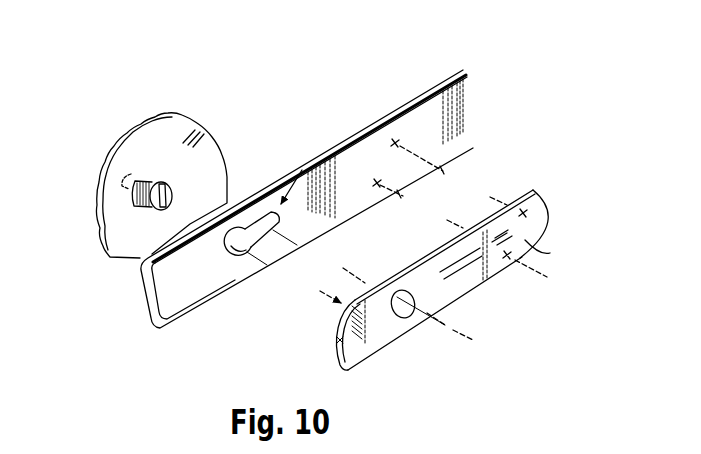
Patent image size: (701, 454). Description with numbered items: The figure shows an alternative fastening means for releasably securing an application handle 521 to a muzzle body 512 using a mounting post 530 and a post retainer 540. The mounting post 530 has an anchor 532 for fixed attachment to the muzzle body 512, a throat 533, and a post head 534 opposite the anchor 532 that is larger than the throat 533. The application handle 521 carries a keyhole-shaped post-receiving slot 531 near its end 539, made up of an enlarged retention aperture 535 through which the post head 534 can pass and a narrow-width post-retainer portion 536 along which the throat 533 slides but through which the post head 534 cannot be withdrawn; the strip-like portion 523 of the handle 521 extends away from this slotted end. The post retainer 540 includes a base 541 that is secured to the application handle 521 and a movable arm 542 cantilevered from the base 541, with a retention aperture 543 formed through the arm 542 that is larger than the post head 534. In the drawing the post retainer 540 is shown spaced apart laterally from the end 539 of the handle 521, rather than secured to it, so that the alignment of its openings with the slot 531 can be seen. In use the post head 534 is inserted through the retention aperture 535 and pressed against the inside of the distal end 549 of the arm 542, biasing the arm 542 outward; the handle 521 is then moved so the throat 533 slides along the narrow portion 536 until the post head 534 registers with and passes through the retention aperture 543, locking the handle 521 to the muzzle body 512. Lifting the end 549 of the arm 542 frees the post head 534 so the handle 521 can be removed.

The muzzle body 512 is at (232, 160).
The application handle 521 is at (375, 122).
The raised strip portion 523 is at (310, 169).
The mounting post 530 is at (136, 213).
The post-receiving slot 531 is at (240, 259).
The anchor 532 is at (134, 176).
The throat 533 is at (146, 181).
The post head 534 is at (172, 194).
The retention aperture 535 is at (228, 249).
The narrow-width post-retainer portion 536 is at (279, 219).
The end of application handle 539 is at (173, 300).
The post retainer 540 is at (461, 306).
The base 541 is at (527, 216).
The movable arm 542 is at (373, 335).
The retention aperture 543 is at (415, 297).
The distal end of arm 549 is at (333, 347).